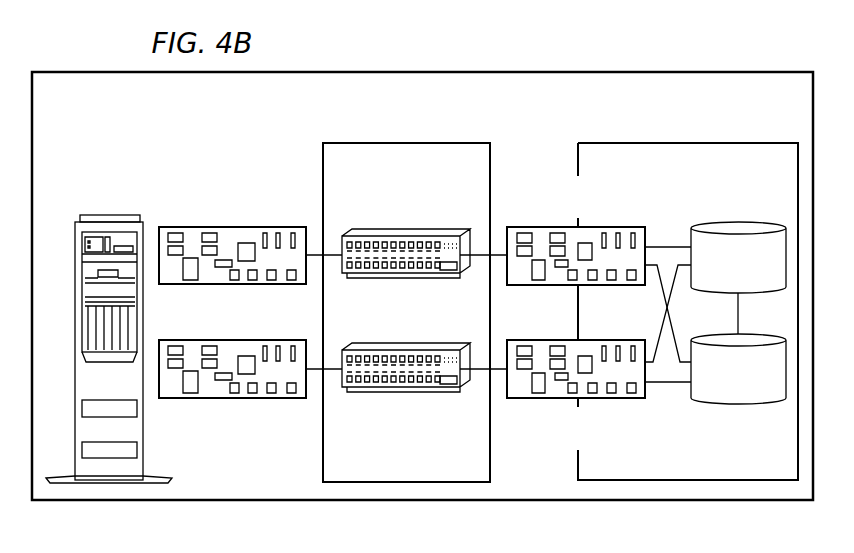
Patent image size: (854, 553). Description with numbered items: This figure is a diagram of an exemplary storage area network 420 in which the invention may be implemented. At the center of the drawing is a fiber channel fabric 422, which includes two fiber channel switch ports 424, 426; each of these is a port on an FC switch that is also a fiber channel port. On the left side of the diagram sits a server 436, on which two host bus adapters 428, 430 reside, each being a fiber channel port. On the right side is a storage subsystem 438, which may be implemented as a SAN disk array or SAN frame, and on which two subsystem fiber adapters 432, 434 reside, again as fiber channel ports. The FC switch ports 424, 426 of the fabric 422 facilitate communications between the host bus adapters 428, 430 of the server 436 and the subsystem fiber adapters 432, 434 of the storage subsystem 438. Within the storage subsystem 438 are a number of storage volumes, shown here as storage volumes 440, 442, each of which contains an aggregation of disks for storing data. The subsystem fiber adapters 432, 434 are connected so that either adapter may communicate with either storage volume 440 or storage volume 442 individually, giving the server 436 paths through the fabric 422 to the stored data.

The storage area network 420 is at (585, 72).
The fiber channel fabric 422 is at (322, 163).
The fiber channel switch port 424 is at (382, 278).
The fiber channel switch port 426 is at (425, 342).
The host bus adapter 428 is at (193, 285).
The host bus adapter 430 is at (273, 338).
The subsystem fiber adapter 432 is at (533, 287).
The subsystem fiber adapter 434 is at (615, 337).
The server 436 is at (107, 215).
The storage subsystem 438 is at (703, 143).
The storage volume 440 is at (747, 227).
The storage volume 442 is at (748, 404).